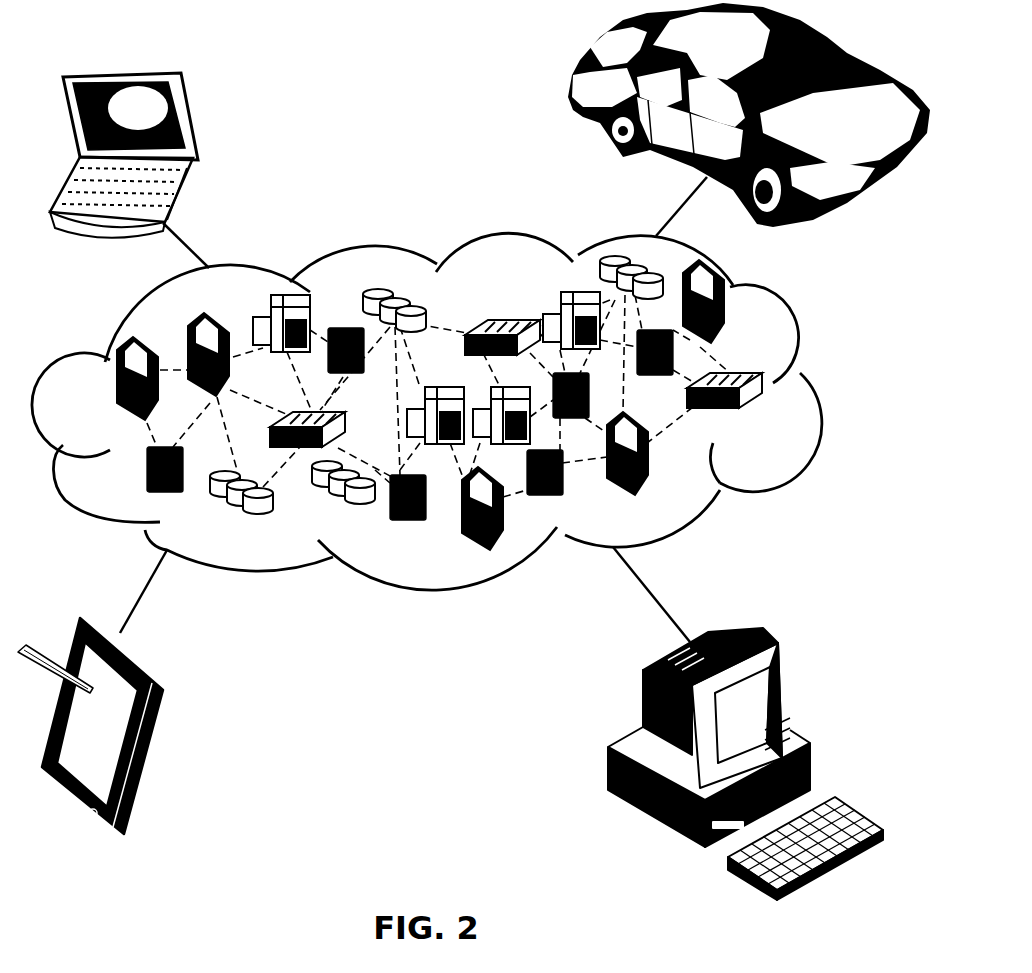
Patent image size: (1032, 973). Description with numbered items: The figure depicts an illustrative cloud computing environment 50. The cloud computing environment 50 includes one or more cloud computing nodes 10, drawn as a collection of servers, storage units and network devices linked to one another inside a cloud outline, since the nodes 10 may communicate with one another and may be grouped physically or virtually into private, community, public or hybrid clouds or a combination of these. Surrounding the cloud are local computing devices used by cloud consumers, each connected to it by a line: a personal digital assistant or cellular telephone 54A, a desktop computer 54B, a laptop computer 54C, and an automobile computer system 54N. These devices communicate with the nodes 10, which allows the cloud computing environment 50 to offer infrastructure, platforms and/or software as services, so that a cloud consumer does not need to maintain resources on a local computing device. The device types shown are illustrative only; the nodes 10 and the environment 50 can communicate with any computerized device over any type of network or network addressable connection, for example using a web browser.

The cloud computing nodes 10 is at (783, 425).
The cloud computing environment 50 is at (820, 388).
The personal digital assistant or cellular telephone 54A is at (157, 718).
The desktop computer 54B is at (750, 630).
The laptop computer 54C is at (194, 117).
The automobile computer system 54N is at (570, 92).